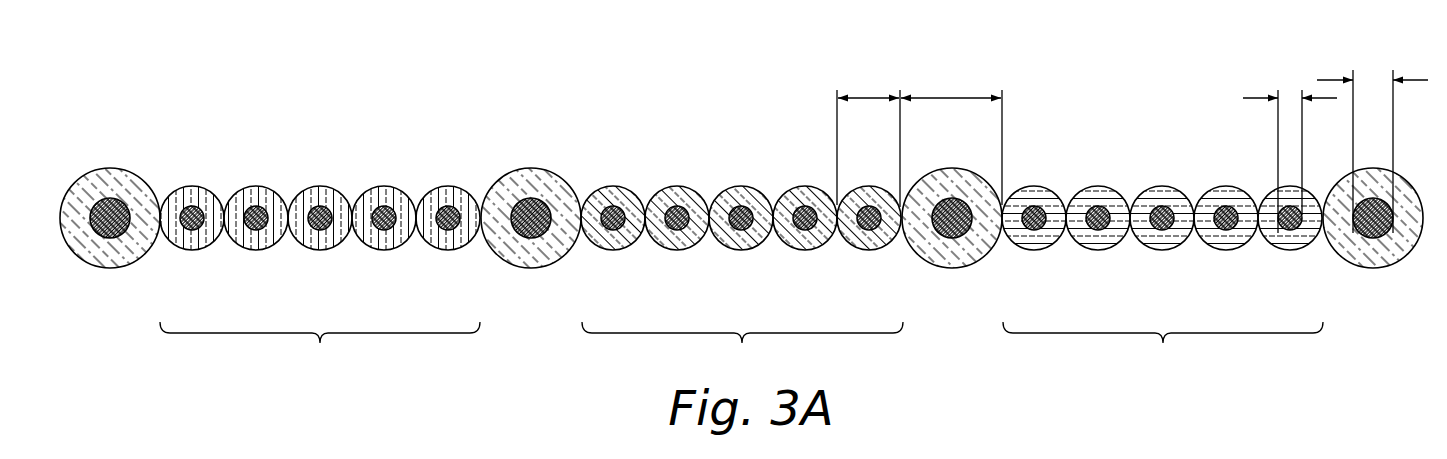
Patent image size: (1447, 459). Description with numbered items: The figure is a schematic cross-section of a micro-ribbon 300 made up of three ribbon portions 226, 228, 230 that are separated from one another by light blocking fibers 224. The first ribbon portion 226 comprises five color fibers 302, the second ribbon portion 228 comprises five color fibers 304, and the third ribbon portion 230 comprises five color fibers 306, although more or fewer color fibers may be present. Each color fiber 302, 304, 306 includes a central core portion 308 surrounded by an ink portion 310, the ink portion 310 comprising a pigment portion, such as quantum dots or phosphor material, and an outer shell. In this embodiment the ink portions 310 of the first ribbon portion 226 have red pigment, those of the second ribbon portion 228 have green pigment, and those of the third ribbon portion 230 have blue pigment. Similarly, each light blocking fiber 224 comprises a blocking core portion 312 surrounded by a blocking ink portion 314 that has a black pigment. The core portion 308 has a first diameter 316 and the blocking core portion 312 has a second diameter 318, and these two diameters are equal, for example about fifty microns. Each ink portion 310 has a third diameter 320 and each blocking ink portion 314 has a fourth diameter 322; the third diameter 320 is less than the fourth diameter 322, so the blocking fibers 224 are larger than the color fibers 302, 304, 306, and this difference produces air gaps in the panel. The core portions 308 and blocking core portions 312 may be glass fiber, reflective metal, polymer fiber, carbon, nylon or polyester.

The micro-ribbon 300 is at (252, 66).
The light blocking fiber 224 is at (110, 270).
The first ribbon portion 226 is at (320, 349).
The second ribbon portion 228 is at (742, 349).
The third ribbon portion 230 is at (1163, 349).
The color fiber 302 is at (192, 252).
The color fiber 304 is at (613, 252).
The color fiber 306 is at (1034, 252).
The core portion 308 is at (198, 227).
The ink portion 310 is at (187, 192).
The blocking core portion 312 is at (118, 226).
The blocking ink portion 314 is at (108, 186).
The first diameter 316 is at (1300, 97).
The second diameter 318 is at (1388, 78).
The third diameter 320 is at (877, 95).
The fourth diameter 322 is at (960, 95).